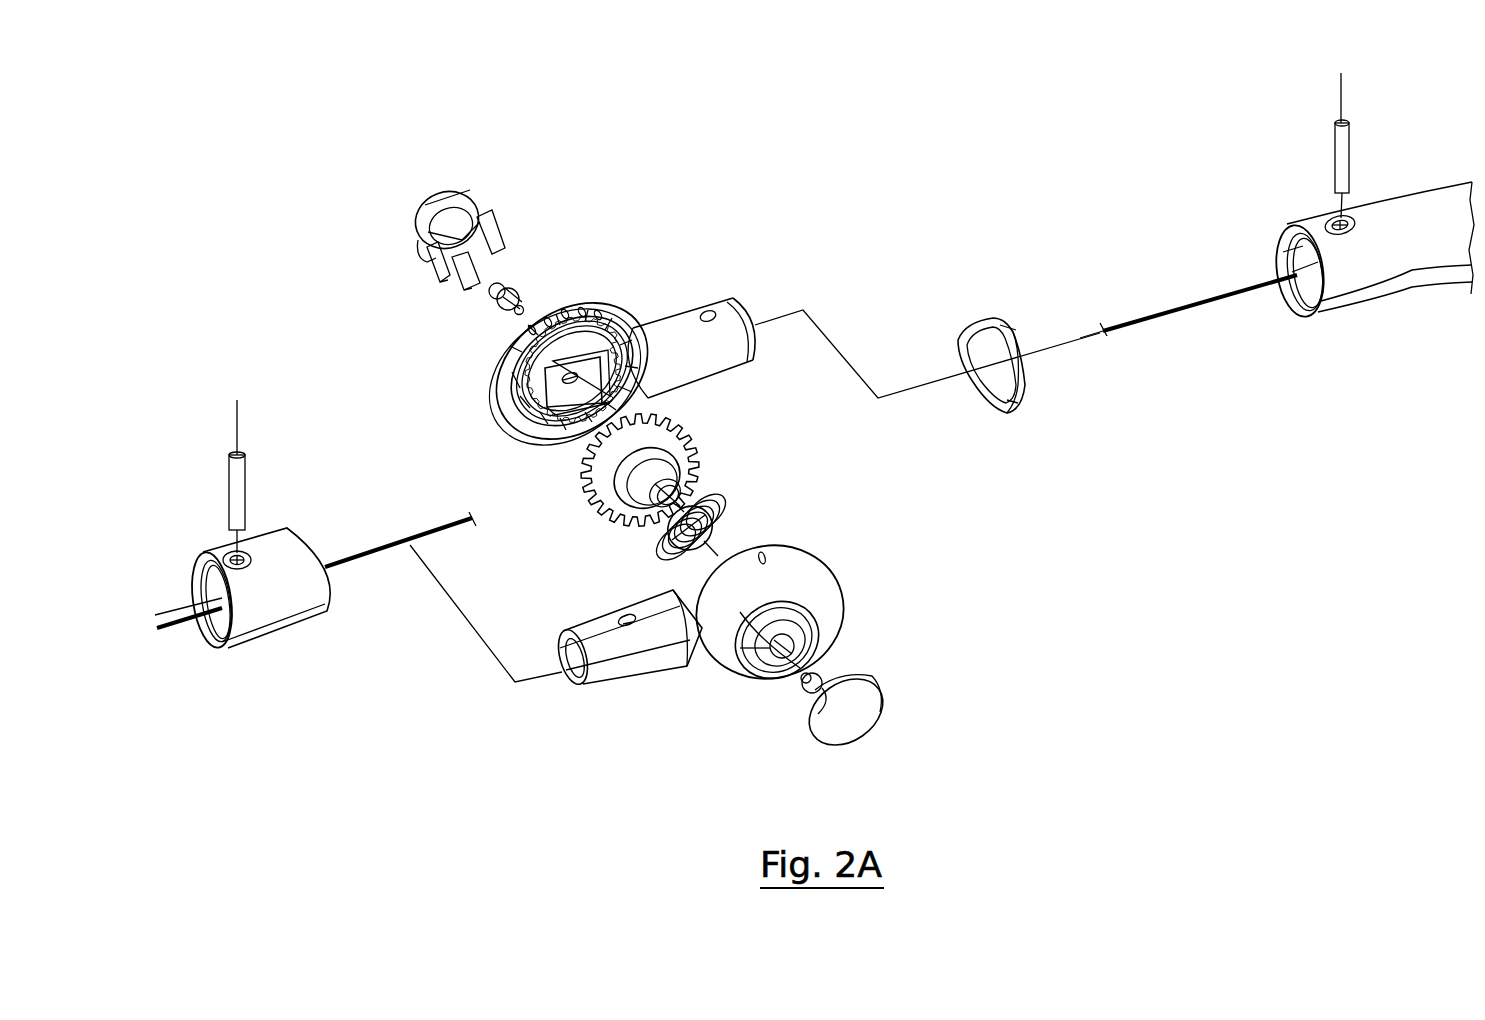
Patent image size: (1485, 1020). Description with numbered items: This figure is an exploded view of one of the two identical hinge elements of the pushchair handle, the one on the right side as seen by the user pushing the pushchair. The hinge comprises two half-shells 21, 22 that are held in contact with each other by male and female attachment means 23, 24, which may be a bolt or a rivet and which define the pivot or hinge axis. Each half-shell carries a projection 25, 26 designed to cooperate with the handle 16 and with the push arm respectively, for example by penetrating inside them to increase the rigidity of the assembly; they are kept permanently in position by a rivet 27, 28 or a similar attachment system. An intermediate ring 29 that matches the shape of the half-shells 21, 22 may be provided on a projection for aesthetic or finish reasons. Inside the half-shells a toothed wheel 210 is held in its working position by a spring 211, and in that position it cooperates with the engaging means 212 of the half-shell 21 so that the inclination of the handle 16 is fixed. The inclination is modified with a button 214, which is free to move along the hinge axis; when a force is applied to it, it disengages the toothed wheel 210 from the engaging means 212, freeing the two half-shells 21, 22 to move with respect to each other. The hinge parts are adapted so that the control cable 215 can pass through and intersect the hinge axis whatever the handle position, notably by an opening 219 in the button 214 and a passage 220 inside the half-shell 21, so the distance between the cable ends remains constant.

The handle 16 is at (1373, 253).
The half-shell 21 is at (577, 302).
The half-shell 22 is at (813, 583).
The male attachment means 23 is at (520, 285).
The female attachment means 24 is at (847, 687).
The projection 25 is at (710, 353).
The projection 26 is at (605, 622).
The rivet 27 is at (1338, 160).
The rivet 28 is at (237, 493).
The intermediate ring 29 is at (995, 323).
The toothed wheel 210 is at (690, 457).
The spring 211 is at (717, 513).
The engaging means 212 is at (547, 428).
The button 214 is at (423, 195).
The control cable 215 is at (1167, 317).
The opening 219 is at (423, 257).
The passage 220 is at (497, 400).